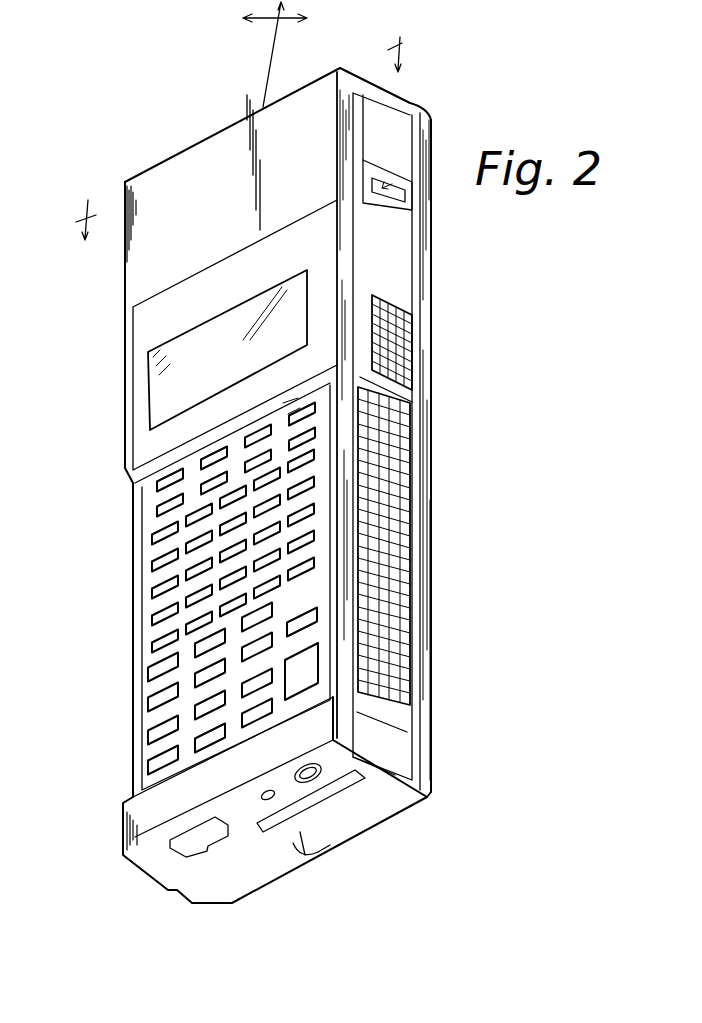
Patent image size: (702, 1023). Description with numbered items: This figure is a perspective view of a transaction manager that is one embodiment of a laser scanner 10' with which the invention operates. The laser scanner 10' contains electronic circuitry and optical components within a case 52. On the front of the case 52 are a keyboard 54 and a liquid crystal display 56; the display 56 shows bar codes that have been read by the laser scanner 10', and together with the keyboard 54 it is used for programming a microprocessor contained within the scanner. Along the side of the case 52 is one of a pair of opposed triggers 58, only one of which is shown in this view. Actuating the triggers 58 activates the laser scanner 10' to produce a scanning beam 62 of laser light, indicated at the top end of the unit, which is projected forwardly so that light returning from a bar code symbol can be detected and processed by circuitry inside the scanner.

The laser scanner 10' is at (305, 470).
The case 52 is at (432, 627).
The keyboard 54 is at (145, 658).
The liquid crystal display (LCD) 56 is at (177, 375).
The triggers 58 is at (413, 470).
The scanning beam 62 is at (266, 68).